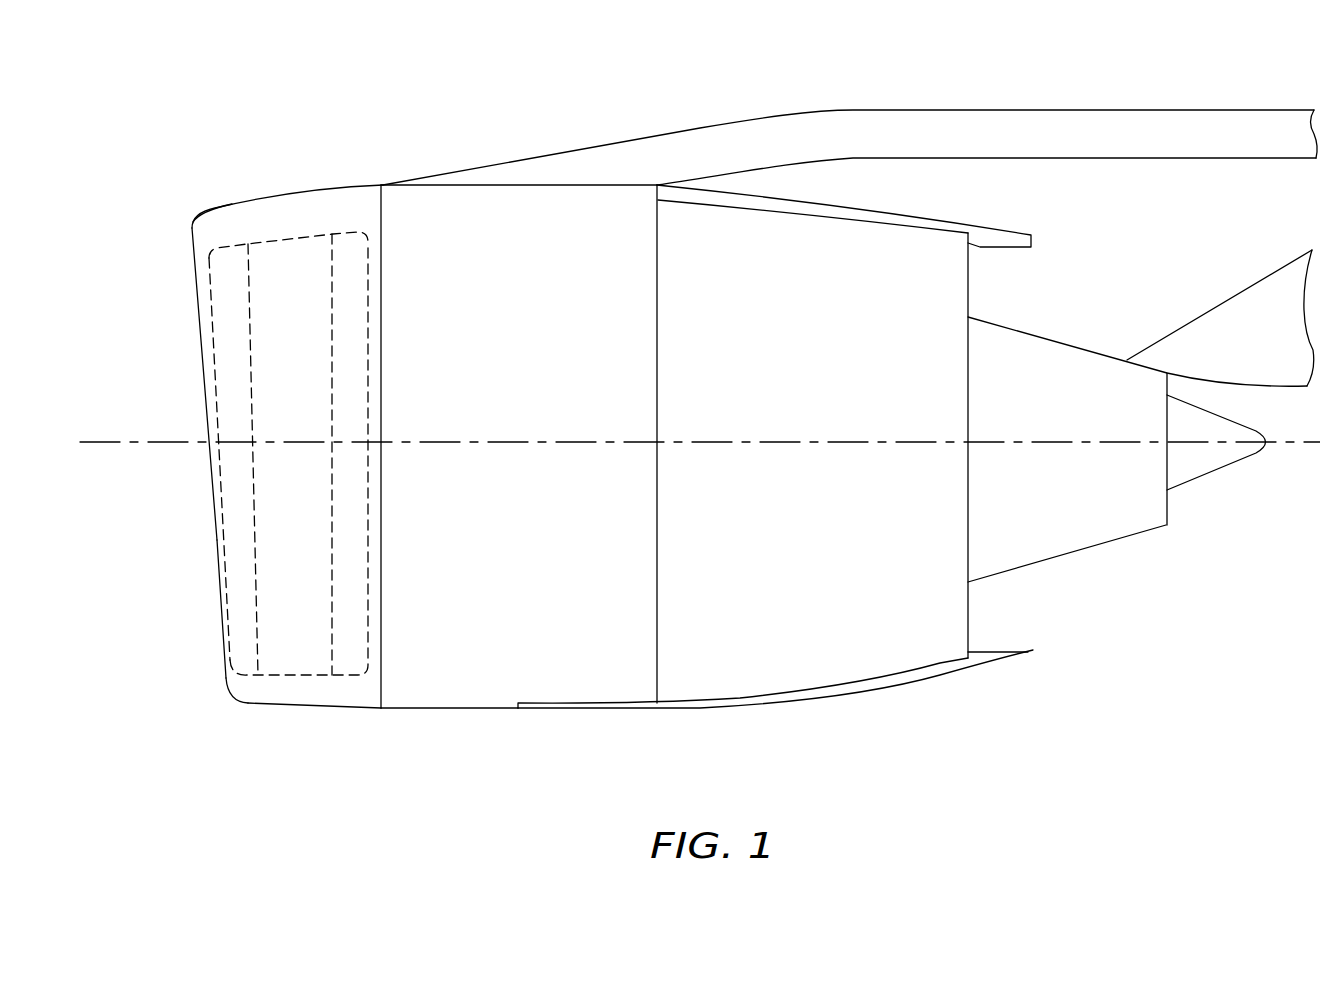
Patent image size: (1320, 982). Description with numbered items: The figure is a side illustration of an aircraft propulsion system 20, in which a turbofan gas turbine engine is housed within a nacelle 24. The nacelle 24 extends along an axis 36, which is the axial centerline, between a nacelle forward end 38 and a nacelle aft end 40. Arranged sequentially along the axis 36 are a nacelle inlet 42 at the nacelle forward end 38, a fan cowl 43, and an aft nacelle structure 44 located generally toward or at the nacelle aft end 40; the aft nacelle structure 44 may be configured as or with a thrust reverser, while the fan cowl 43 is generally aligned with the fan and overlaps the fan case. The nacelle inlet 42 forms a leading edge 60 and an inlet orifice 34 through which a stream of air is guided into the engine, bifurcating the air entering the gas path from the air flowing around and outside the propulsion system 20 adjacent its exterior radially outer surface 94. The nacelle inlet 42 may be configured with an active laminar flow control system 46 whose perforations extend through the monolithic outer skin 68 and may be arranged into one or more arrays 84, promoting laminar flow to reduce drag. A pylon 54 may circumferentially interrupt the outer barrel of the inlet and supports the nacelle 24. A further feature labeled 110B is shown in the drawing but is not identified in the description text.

The aircraft propulsion system 20 is at (180, 114).
The nacelle 24 is at (311, 172).
The inlet orifice 34 is at (208, 617).
The axis 36 is at (85, 447).
The nacelle forward end 38 is at (192, 232).
The nacelle aft end 40 is at (1033, 650).
The nacelle inlet 42 is at (303, 714).
The fan cowl 43 is at (488, 724).
The aft nacelle structure 44 is at (744, 705).
The active laminar flow control system 46 is at (238, 684).
The pylon 54 is at (580, 160).
The leading edge 60 is at (197, 287).
The outer skin 68 is at (278, 196).
The radially outer surface 94 is at (237, 218).
The arrays 84 is at (240, 650).
The bulkhead 110B is at (208, 541).